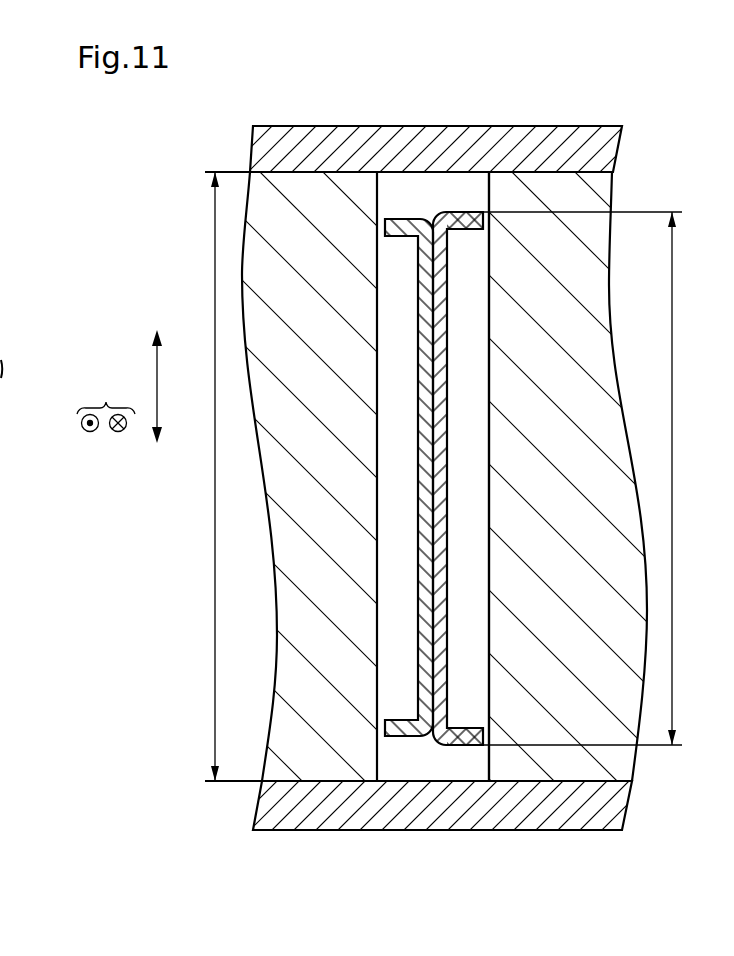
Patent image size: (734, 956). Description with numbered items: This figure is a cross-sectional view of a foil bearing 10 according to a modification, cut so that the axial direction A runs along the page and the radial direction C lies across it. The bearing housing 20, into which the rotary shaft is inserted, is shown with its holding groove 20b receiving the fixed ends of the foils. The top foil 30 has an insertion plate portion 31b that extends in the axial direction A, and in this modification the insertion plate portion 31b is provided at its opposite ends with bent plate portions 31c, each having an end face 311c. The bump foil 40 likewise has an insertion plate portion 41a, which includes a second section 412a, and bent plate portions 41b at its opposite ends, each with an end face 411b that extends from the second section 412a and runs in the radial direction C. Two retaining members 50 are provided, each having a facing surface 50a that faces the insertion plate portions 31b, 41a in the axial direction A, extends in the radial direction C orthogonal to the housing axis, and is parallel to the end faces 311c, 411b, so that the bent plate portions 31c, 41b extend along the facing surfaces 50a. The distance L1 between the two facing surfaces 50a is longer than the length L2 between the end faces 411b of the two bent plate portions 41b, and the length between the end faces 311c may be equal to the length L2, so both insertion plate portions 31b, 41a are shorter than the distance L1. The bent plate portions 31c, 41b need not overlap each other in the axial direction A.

The structure 10 is at (240, 106).
The bearing housing 20 is at (612, 187).
The holding groove 20b is at (490, 511).
The top foil 30 is at (417, 400).
The insertion plate portion 31b is at (405, 483).
The bent plate portions 31c is at (385, 228).
The end face 311c is at (421, 218).
The bump foil 40 is at (448, 410).
The insertion plate portion 41a is at (466, 351).
The bent plate portions 41b is at (484, 213).
The end face 411b is at (474, 212).
The second section 412a is at (448, 373).
The retaining member 50 is at (335, 126).
The facing surface 50a is at (399, 182).
The distance between the two facing surfaces L1 is at (215, 478).
The length between the end faces of the bent plate portions L2 is at (673, 480).
The axial direction A is at (157, 365).
The radial direction C is at (106, 404).